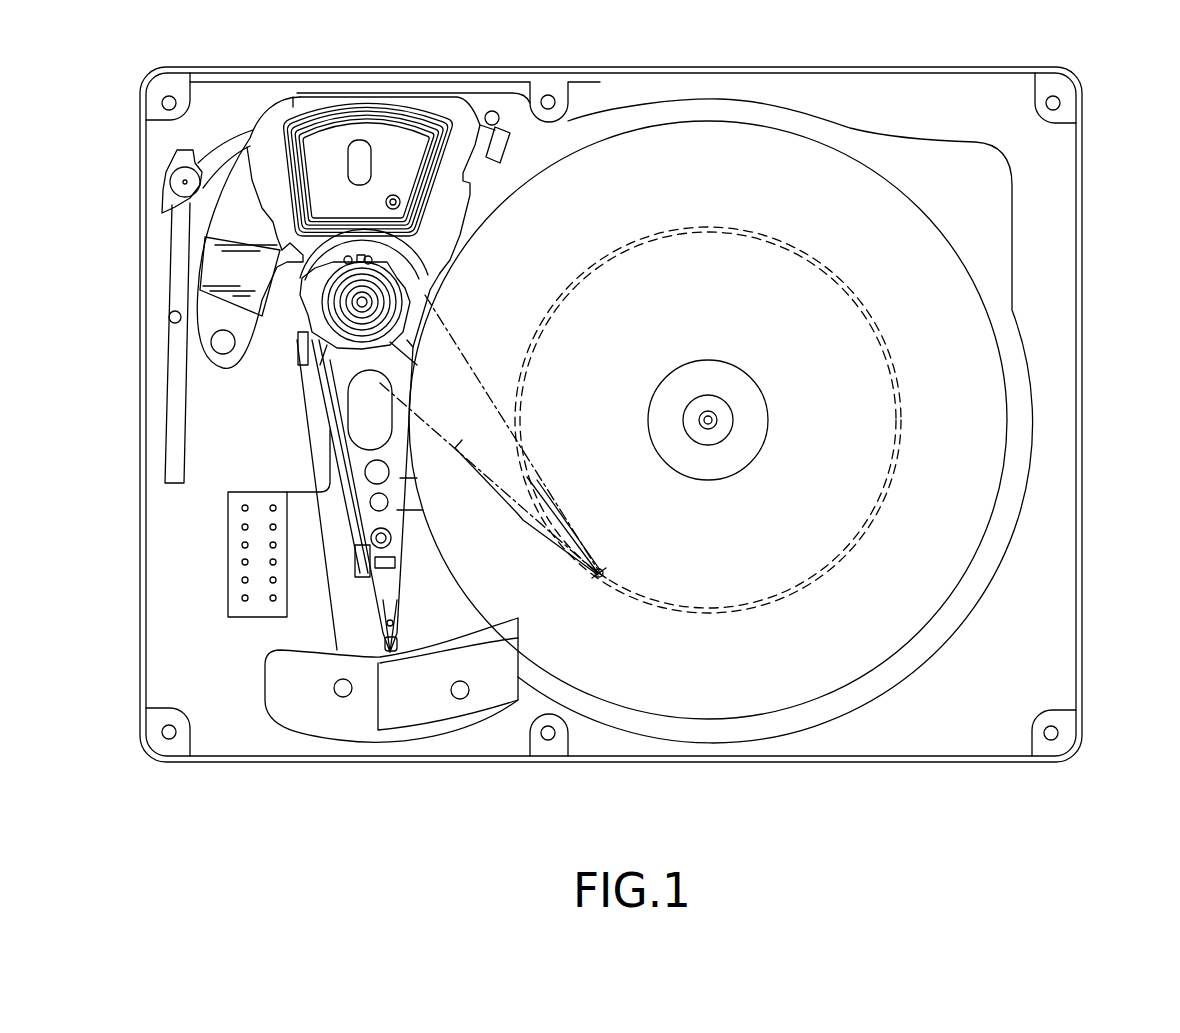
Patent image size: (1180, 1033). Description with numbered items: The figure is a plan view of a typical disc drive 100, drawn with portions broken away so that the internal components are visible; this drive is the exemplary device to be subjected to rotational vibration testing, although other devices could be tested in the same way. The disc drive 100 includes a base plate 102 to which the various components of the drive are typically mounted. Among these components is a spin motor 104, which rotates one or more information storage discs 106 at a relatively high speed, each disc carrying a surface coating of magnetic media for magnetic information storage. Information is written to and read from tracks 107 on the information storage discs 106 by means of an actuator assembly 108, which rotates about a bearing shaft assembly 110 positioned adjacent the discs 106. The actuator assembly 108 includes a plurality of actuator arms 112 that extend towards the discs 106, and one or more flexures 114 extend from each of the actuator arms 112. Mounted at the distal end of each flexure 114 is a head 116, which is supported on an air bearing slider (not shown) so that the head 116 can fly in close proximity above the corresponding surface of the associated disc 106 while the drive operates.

The disc drive 100 is at (922, 783).
The base plate 102 is at (1079, 572).
The spin motor 104 is at (758, 381).
The information storage disc 106 is at (785, 148).
The tracks 107 is at (660, 605).
The actuator assembly 108 is at (447, 260).
The bearing shaft assembly 110 is at (362, 302).
The actuator arm 112 is at (345, 428).
The flexure 114 is at (400, 585).
The head 116 is at (605, 572).